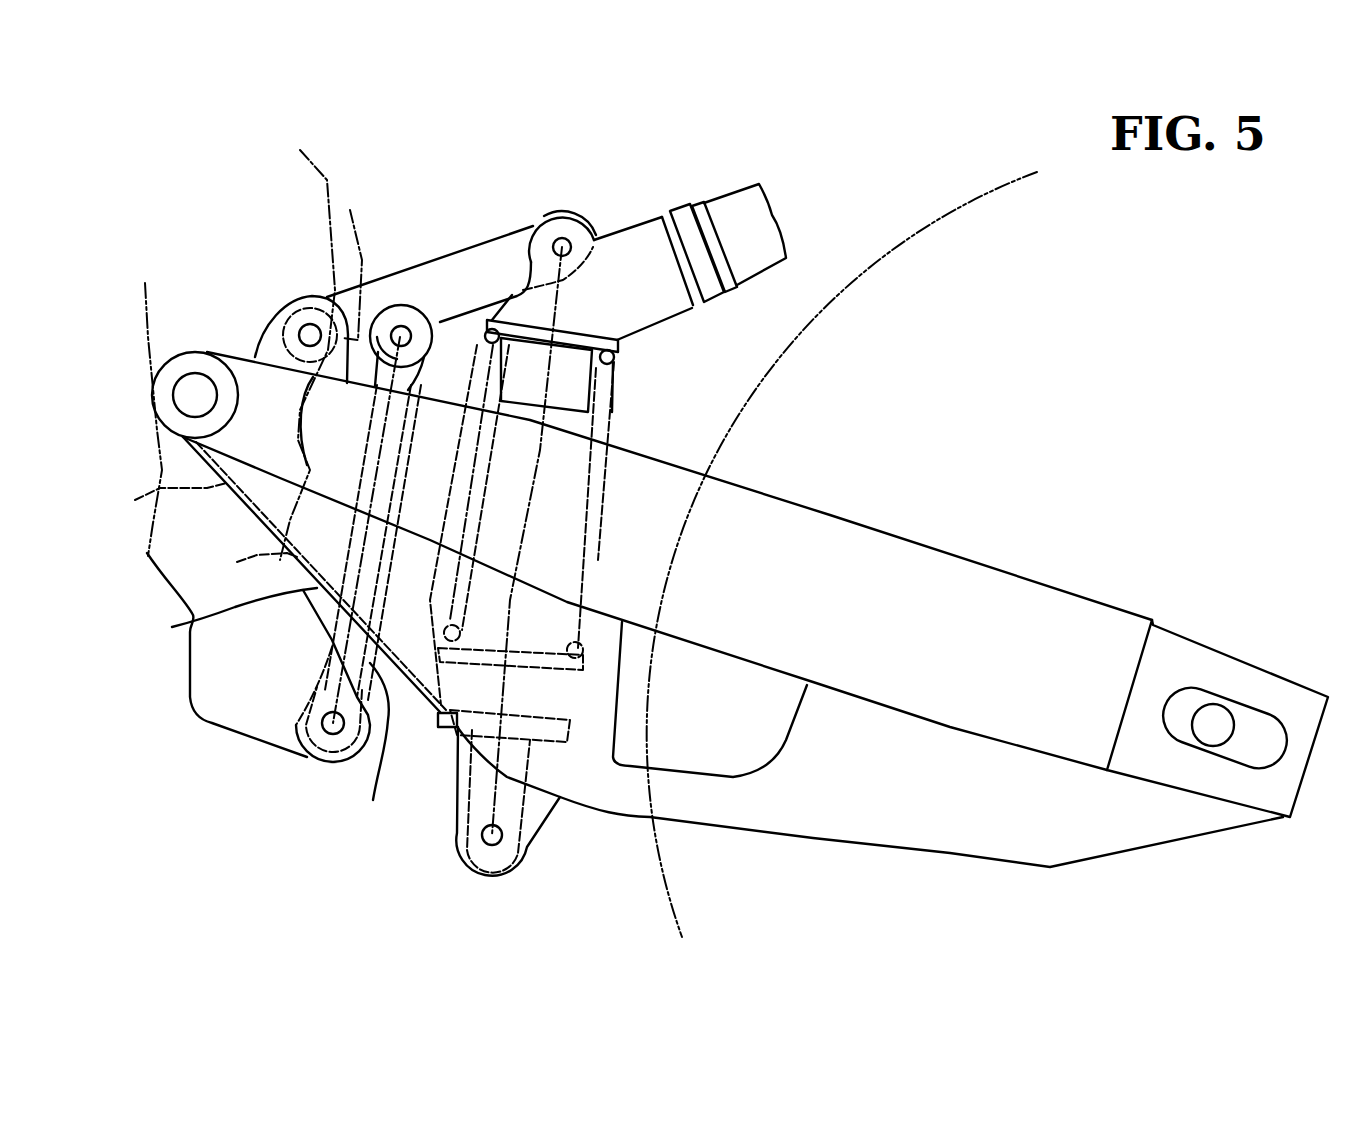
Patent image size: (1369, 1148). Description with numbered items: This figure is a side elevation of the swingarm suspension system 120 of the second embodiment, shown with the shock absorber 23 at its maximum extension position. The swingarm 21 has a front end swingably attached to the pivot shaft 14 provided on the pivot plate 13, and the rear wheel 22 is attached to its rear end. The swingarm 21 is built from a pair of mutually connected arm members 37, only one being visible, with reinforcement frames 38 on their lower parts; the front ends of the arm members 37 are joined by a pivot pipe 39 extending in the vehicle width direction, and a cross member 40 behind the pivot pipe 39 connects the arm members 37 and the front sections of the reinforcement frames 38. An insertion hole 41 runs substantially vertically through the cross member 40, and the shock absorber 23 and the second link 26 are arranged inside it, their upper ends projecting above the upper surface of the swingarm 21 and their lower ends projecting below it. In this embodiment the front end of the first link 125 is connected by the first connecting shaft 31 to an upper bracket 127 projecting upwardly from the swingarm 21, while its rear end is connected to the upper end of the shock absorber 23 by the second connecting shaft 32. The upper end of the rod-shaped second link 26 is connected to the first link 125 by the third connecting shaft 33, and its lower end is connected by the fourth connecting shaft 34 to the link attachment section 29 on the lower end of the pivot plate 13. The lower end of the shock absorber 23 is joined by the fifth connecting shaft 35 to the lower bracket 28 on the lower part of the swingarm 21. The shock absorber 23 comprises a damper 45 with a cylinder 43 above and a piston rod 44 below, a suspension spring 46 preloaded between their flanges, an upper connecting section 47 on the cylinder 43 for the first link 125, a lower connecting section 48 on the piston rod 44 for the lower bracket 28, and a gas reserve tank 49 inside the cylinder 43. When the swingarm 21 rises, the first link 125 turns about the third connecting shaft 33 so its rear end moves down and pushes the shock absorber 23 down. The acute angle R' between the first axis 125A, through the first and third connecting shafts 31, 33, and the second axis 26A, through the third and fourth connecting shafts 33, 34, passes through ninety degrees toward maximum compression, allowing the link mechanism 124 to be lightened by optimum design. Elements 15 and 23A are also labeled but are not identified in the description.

The pivot plate 13 is at (143, 563).
The pivot shaft 14 is at (177, 397).
The rear axle mounting portion 15 is at (1220, 710).
The swingarm 21 is at (826, 502).
The rear wheel 22 is at (940, 213).
The shock absorber 23 is at (641, 395).
The bracket mounting plate 23A is at (553, 327).
The second link 26 is at (373, 800).
The second axis 26A is at (340, 650).
The lower bracket 28 is at (530, 845).
The link attachment section 29 is at (240, 733).
The first connecting shaft 31 is at (300, 323).
The second connecting shaft 32 is at (592, 225).
The third connecting shaft 33 is at (403, 312).
The fourth connecting shaft 34 is at (328, 734).
The fifth connecting shaft 35 is at (492, 845).
The arm member 37 is at (765, 490).
The reinforcement frame 38 is at (750, 830).
The pivot pipe 39 is at (180, 350).
The cross member 40 is at (163, 502).
The insertion hole 41 is at (248, 567).
The cylinder 43 is at (573, 488).
The piston rod 44 is at (540, 560).
The damper 45 is at (743, 507).
The suspension spring 46 is at (613, 427).
The connecting section 47 is at (543, 217).
The connecting section 48 is at (453, 833).
The reserve tank 49 is at (738, 187).
The swingarm suspension system 120 is at (690, 124).
The link mechanism 124 is at (488, 530).
The first link 125 is at (468, 244).
The first axis 125A is at (290, 403).
The upper bracket 127 is at (270, 323).